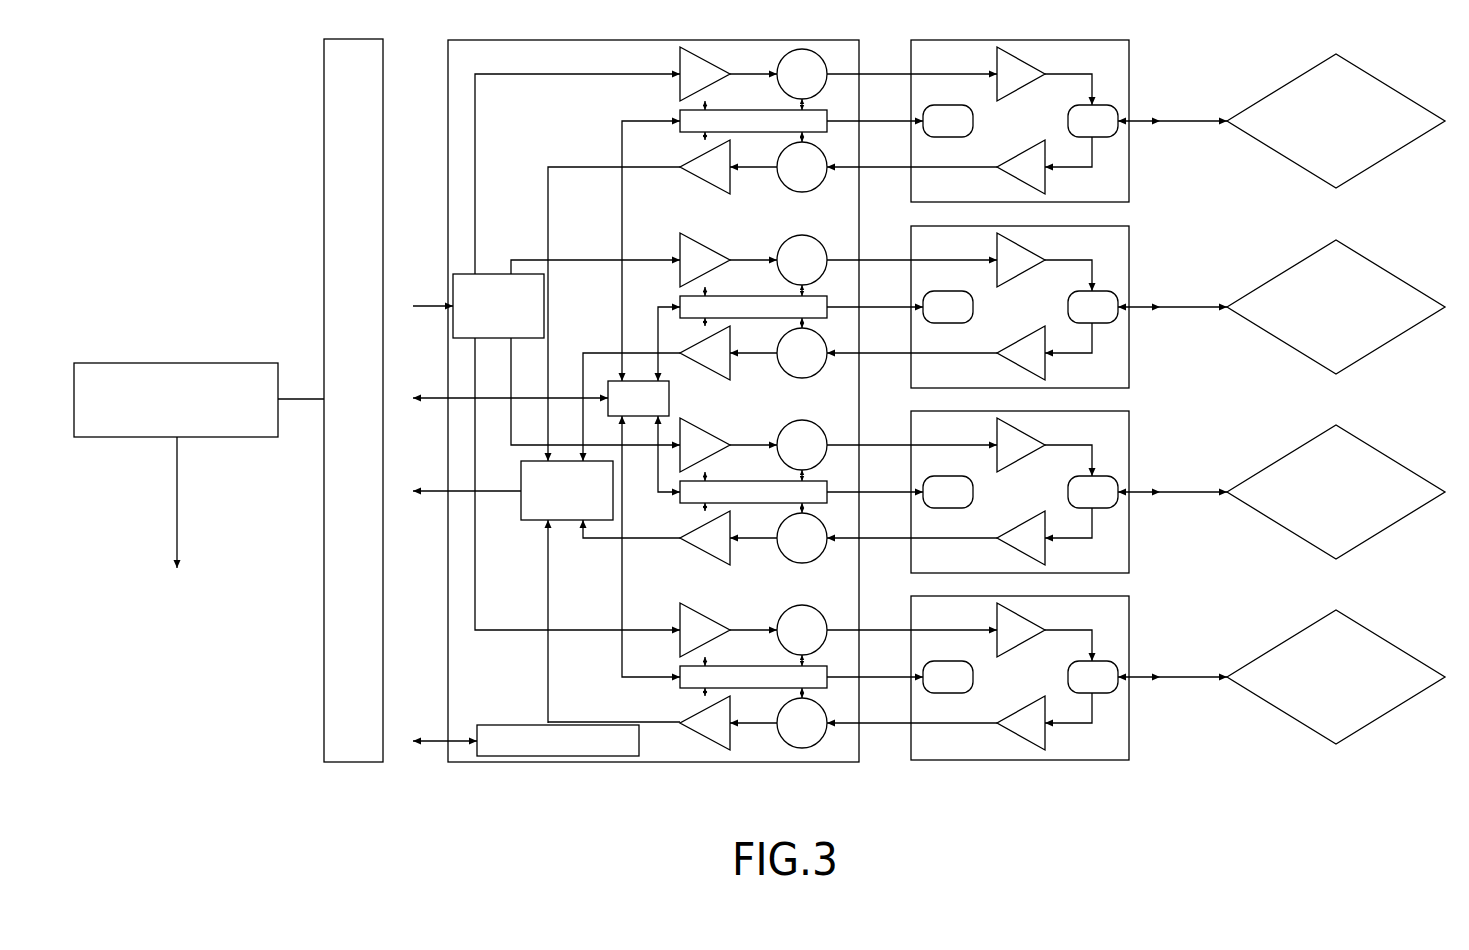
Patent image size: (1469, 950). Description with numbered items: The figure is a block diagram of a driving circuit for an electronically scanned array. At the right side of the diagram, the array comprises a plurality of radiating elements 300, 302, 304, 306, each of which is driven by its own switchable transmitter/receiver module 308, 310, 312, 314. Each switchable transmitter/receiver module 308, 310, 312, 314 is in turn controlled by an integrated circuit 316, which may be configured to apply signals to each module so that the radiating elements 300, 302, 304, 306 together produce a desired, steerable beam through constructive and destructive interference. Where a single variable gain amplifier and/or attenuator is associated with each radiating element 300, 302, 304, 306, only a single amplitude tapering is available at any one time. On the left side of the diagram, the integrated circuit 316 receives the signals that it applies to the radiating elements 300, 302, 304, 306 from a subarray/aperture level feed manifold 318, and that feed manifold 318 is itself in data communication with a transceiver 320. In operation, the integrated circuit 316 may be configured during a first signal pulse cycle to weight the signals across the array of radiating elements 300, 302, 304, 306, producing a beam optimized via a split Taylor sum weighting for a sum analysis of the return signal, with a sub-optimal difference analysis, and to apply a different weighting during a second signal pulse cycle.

The radiating element 300 is at (1316, 131).
The radiating element 302 is at (1316, 317).
The radiating element 304 is at (1316, 502).
The radiating element 306 is at (1316, 687).
The switchable transmitter/receiver module 308 is at (955, 66).
The switchable transmitter/receiver module 310 is at (955, 252).
The switchable transmitter/receiver module 312 is at (955, 437).
The switchable transmitter/receiver module 314 is at (955, 624).
The integrated circuit 316 is at (490, 66).
The subarray/aperture level feed manifold 318 is at (334, 412).
The transceiver 320 is at (158, 412).